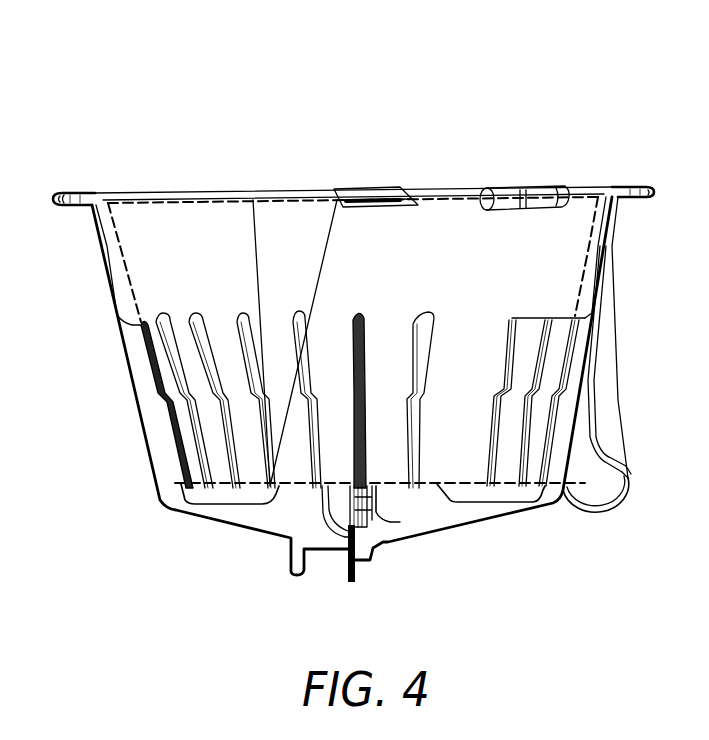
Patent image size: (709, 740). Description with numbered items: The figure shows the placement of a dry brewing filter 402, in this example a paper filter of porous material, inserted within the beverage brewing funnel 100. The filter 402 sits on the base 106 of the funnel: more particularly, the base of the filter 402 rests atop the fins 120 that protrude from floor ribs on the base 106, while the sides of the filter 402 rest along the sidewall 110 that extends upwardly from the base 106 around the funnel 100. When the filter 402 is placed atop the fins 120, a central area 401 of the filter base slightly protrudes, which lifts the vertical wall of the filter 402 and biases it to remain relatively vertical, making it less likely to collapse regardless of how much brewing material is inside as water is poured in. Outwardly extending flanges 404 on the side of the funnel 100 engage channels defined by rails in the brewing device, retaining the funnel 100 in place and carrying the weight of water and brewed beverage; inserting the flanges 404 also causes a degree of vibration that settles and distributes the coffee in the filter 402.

The beverage brewing funnel 100 is at (546, 108).
The sidewall 110 is at (555, 254).
The fins 120 is at (382, 483).
The base 106 is at (378, 520).
The central area 401 is at (339, 574).
The brewing filter 402 is at (170, 203).
The flanges 404 is at (78, 190).